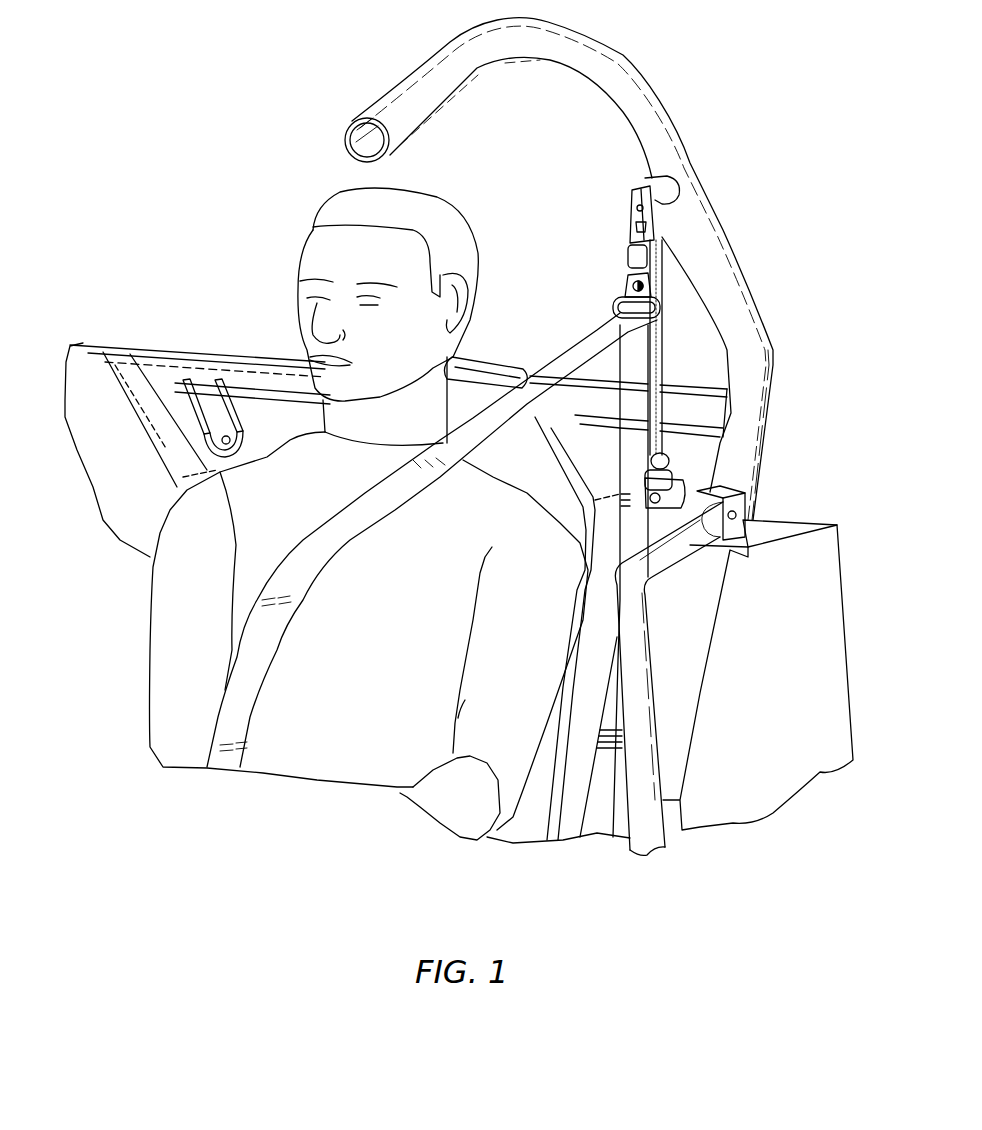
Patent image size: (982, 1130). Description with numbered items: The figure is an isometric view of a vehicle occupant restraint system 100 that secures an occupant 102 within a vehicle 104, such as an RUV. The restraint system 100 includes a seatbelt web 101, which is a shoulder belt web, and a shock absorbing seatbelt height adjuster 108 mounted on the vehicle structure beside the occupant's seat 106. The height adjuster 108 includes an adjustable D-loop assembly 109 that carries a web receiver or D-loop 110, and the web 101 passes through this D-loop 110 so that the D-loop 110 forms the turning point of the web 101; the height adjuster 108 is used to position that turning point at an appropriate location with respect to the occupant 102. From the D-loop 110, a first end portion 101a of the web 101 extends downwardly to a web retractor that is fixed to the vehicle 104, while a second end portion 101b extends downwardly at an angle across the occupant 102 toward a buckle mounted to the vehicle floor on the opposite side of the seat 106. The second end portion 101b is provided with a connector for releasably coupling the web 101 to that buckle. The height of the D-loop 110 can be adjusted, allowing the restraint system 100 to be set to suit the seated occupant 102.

The vehicle occupant restraint system 100 is at (684, 350).
The seatbelt web 101 is at (500, 573).
The first end portion of the web 101a is at (653, 434).
The second end portion of the web 101b is at (557, 360).
The occupant 102 is at (268, 475).
The vehicle 104 is at (800, 523).
The seat 106 is at (492, 390).
The shock absorbing seatbelt height adjuster 108 is at (598, 200).
The adjustable D-loop assembly 109 is at (624, 281).
The D-loop 110 is at (618, 303).